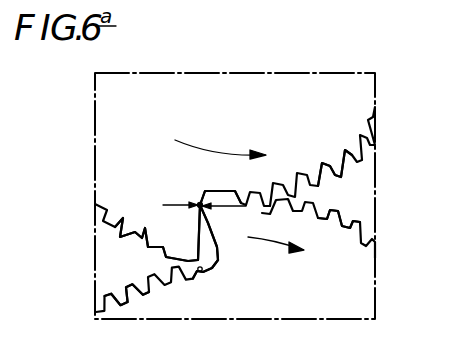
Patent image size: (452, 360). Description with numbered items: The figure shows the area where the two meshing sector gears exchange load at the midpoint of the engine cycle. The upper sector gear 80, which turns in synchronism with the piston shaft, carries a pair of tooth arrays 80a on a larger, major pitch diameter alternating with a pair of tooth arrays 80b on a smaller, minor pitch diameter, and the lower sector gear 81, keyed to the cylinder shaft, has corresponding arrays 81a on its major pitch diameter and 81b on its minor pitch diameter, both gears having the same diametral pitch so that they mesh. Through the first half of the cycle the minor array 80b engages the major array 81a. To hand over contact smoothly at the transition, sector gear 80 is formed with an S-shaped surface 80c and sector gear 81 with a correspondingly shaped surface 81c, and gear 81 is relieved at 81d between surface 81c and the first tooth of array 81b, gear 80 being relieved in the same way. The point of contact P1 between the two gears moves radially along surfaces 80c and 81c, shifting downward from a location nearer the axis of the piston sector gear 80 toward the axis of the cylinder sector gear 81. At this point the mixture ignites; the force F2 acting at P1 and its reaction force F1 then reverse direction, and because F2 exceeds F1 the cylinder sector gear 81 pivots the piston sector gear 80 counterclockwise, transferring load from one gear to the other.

The sector gear 80 is at (235, 112).
The tooth array 80a is at (147, 228).
The tooth array 80b is at (330, 167).
The surface 80c is at (198, 254).
The sector gear 81 is at (292, 304).
The tooth array 81a is at (340, 228).
The tooth array 81b is at (150, 278).
The surface 81c is at (217, 249).
The relief 81d is at (222, 301).
The point of contact P1 is at (200, 200).
The force F1 is at (180, 195).
The force F2 is at (224, 218).